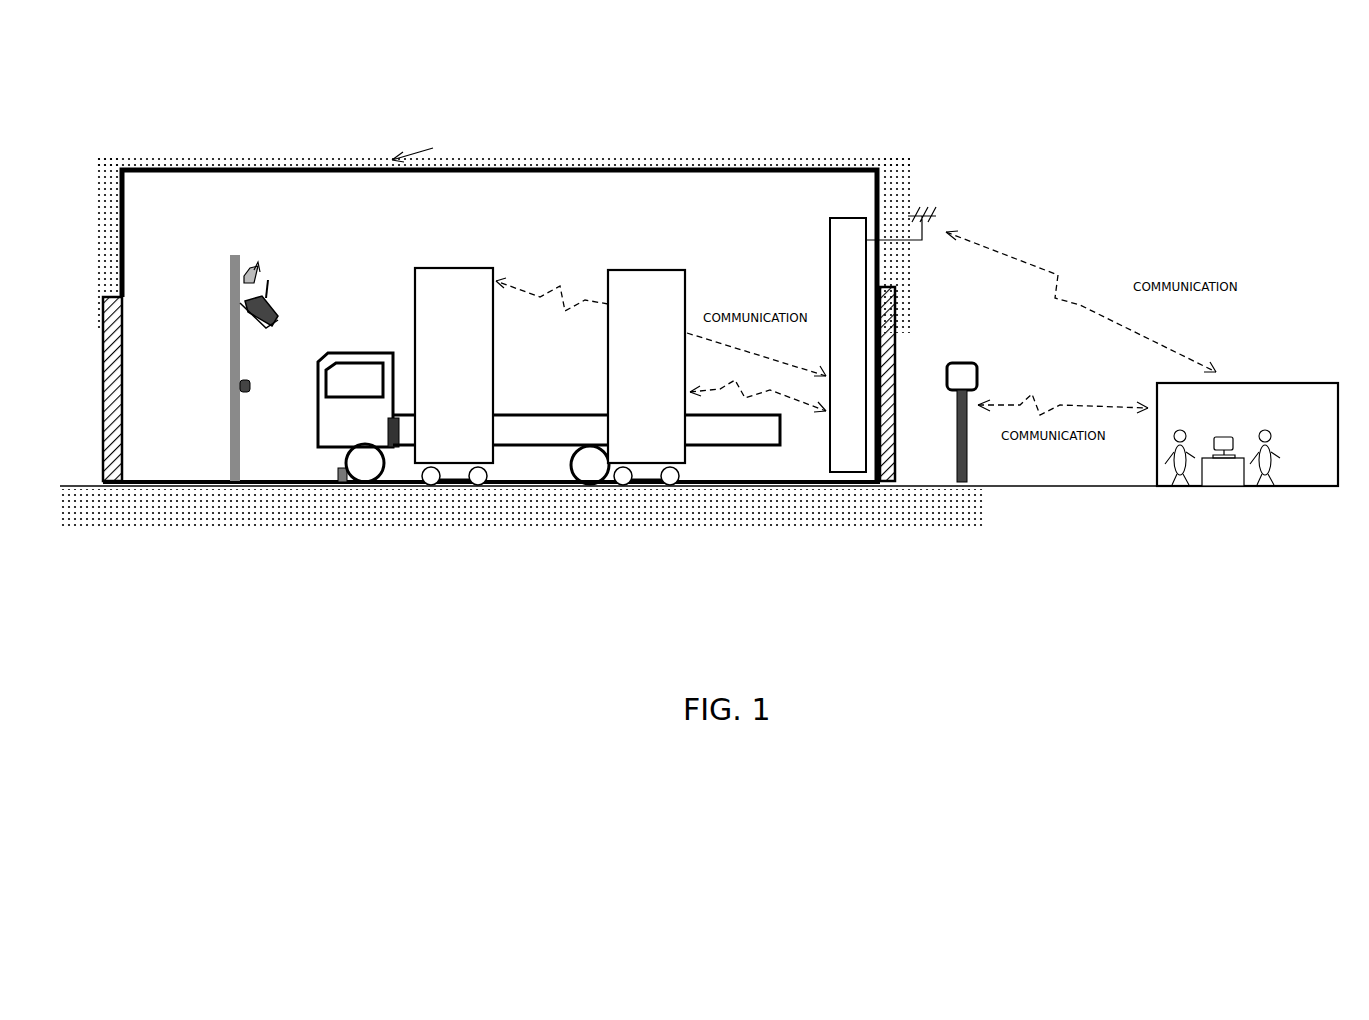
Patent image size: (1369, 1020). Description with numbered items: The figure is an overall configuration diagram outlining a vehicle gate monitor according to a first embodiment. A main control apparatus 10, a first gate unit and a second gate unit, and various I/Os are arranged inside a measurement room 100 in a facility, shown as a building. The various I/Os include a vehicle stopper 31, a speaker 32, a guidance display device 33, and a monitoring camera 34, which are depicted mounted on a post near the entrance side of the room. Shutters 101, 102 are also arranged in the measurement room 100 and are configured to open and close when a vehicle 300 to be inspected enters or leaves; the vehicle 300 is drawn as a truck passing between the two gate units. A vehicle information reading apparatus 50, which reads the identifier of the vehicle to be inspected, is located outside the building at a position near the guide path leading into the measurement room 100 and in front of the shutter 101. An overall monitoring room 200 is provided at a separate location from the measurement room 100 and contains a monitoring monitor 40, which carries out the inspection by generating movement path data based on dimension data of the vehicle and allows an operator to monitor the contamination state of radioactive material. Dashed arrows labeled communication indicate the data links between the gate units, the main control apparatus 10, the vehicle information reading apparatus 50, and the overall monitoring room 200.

The measurement room 100 is at (577, 168).
The shutter 101 is at (885, 488).
The shutter 102 is at (115, 488).
The main control apparatus 10 is at (840, 473).
The vehicle 300 is at (358, 433).
The vehicle stopper 31 is at (340, 486).
The speaker 32 is at (265, 270).
The guidance display device 33 is at (285, 318).
The monitoring camera 34 is at (256, 380).
The vehicle information reading apparatus 50 is at (967, 460).
The overall monitoring room 200 is at (1270, 392).
The monitoring monitor 40 is at (1226, 458).